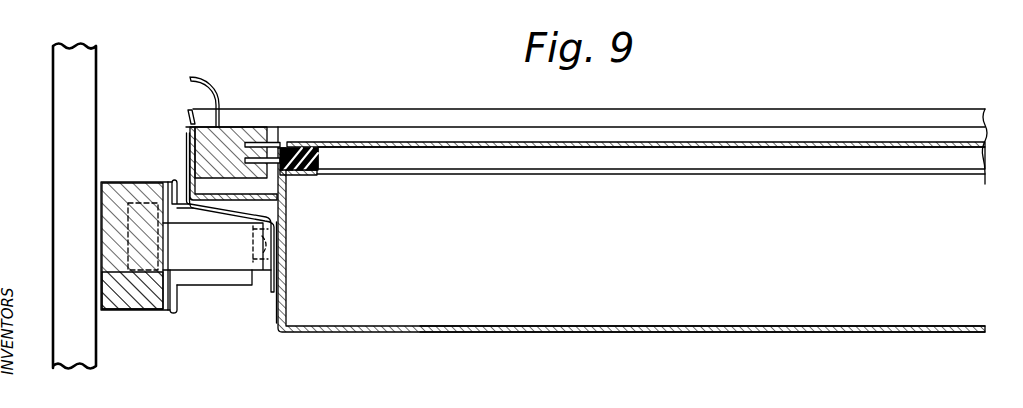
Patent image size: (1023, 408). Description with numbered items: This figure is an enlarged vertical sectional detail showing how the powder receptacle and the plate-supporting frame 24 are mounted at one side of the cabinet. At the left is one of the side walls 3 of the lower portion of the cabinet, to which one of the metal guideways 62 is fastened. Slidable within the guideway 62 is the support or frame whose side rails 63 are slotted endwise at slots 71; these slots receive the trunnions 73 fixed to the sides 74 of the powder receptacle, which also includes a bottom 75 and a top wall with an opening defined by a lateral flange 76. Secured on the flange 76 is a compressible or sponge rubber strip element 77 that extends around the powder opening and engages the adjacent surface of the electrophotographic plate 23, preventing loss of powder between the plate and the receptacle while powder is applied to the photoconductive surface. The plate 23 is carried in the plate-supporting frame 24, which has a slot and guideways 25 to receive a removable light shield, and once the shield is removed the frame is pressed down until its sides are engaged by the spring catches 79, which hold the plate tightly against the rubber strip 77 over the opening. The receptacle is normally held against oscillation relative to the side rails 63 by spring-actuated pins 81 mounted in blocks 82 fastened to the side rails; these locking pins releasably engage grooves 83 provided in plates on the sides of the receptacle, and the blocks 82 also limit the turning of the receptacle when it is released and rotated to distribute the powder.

The side walls 3 is at (54, 71).
The spring catches 79 is at (215, 90).
The plate-supporting frame 24 is at (240, 128).
The compressible or sponge rubber strip element 77 is at (317, 152).
The slot and guideways 25 is at (265, 183).
The lateral flange 76 is at (320, 176).
The electrophotographic plate 23 is at (460, 150).
The metal guideways 62 is at (124, 183).
The slots 71 is at (160, 182).
The spring-actuated pins 81 is at (252, 247).
The grooves 83 is at (287, 262).
The trunnions 73 is at (204, 263).
The blocks 82 is at (242, 286).
The sides 74 is at (291, 294).
The bottom 75 is at (410, 332).
The side rails 63 is at (135, 303).